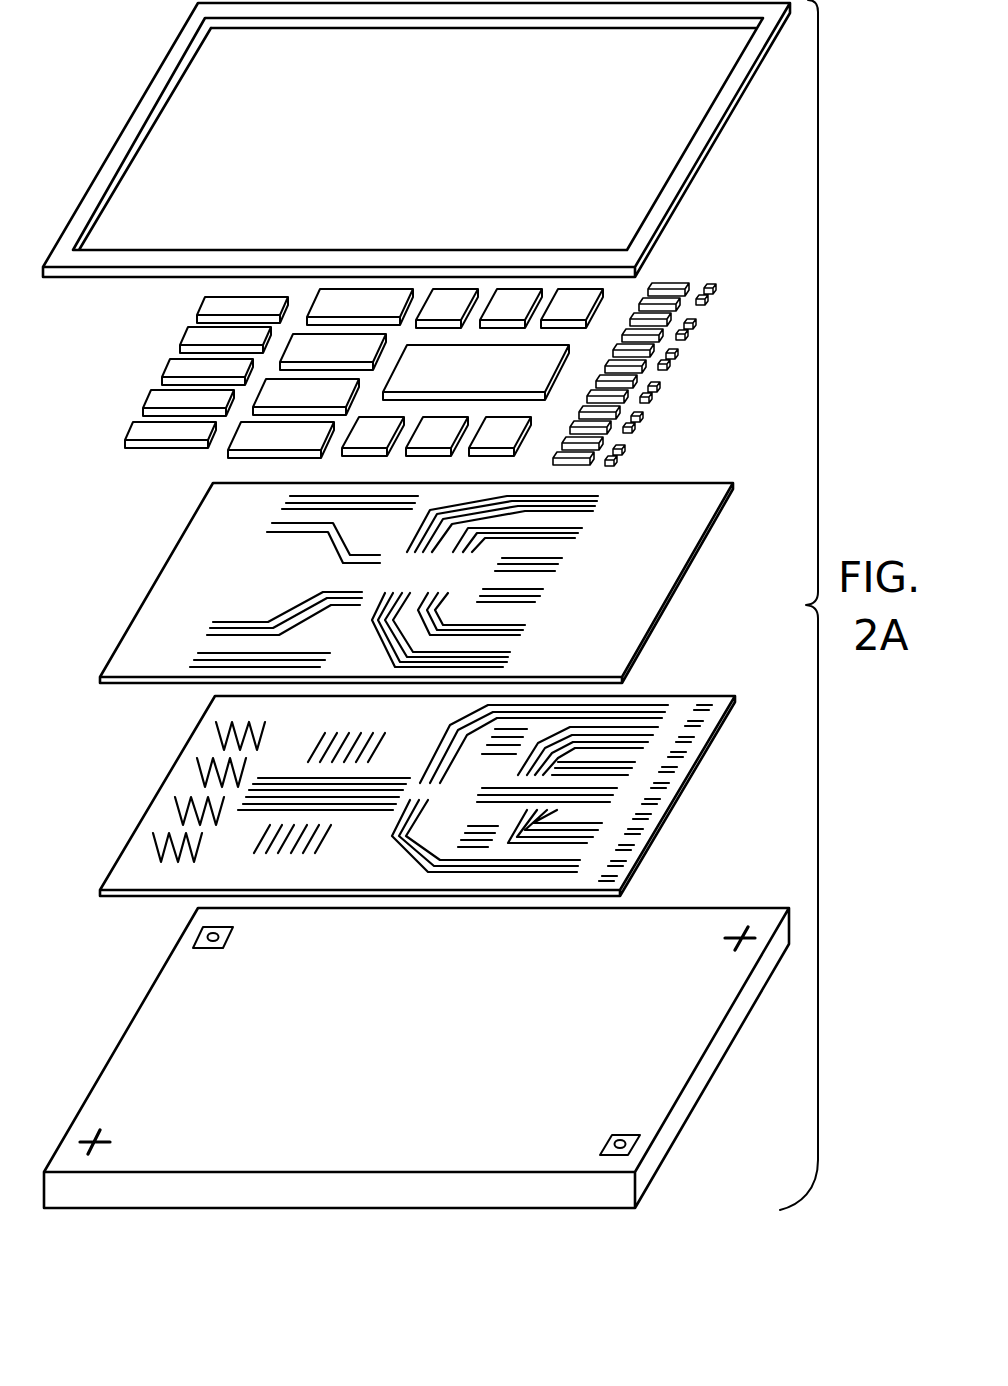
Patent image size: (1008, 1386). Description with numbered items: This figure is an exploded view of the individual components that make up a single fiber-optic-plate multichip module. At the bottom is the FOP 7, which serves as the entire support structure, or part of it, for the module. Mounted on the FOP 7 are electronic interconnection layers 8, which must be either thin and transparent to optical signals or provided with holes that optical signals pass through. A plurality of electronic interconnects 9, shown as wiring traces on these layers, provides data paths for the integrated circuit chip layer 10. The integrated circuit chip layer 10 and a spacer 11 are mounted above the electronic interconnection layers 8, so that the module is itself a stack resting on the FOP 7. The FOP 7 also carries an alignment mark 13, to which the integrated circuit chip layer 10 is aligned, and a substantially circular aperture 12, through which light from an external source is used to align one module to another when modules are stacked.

The FOP 7 is at (707, 1092).
The electronic interconnection layers 8 is at (703, 537).
The electronic interconnects 9 is at (578, 518).
The integrated circuit chip layer 10 is at (612, 470).
The spacer 11 is at (687, 188).
The circular aperture 12 is at (628, 1135).
The alignment mark 13 is at (735, 945).